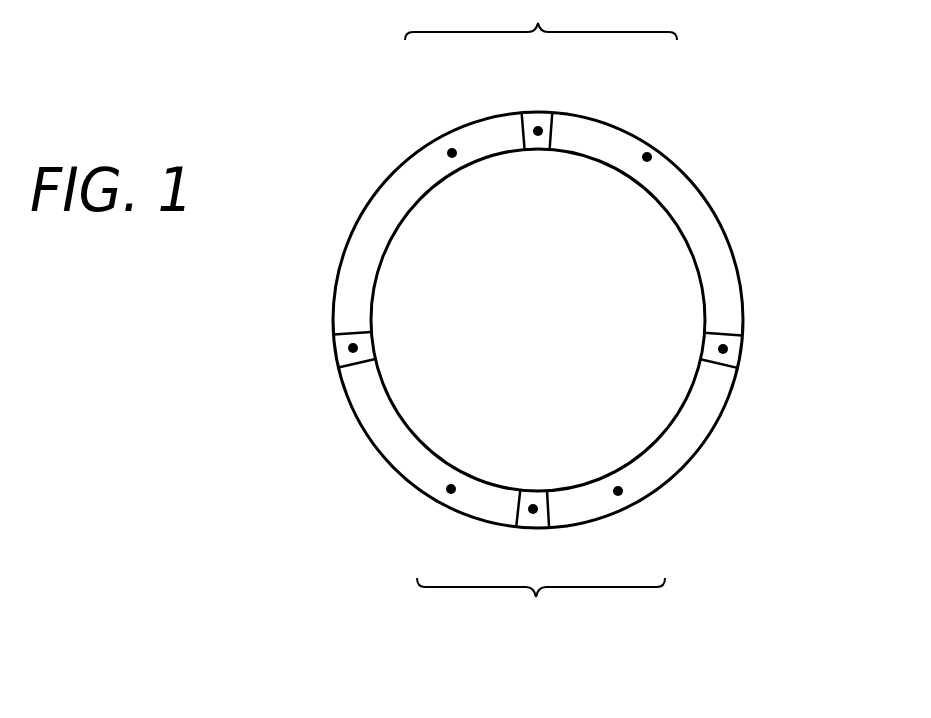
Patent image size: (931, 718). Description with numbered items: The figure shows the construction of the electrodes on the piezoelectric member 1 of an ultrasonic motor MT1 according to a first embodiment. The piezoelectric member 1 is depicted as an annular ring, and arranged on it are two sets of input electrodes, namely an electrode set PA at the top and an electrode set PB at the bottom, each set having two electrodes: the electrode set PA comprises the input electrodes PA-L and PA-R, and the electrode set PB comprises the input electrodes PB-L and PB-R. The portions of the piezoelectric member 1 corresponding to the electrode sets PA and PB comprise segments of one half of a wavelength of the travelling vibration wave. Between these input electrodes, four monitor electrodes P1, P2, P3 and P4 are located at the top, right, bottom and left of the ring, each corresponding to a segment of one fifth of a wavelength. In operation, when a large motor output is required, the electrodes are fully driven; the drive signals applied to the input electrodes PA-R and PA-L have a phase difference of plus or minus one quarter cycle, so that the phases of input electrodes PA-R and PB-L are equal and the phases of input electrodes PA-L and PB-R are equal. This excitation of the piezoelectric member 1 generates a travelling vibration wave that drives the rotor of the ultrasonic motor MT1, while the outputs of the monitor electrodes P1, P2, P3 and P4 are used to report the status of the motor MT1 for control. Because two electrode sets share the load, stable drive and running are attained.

The piezoelectric member 1 is at (716, 277).
The ultrasonic motor MT1 is at (552, 313).
The monitor electrode P1 is at (539, 137).
The monitor electrode P2 is at (723, 349).
The monitor electrode P3 is at (533, 508).
The monitor electrode P4 is at (353, 348).
The electrode set PA is at (541, 20).
The input electrode PA-L is at (452, 153).
The input electrode PA-R is at (647, 157).
The electrode set PB is at (541, 602).
The input electrode PB-L is at (451, 489).
The input electrode PB-R is at (618, 491).